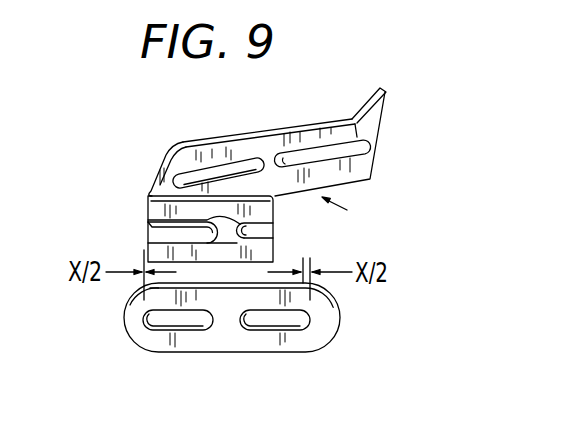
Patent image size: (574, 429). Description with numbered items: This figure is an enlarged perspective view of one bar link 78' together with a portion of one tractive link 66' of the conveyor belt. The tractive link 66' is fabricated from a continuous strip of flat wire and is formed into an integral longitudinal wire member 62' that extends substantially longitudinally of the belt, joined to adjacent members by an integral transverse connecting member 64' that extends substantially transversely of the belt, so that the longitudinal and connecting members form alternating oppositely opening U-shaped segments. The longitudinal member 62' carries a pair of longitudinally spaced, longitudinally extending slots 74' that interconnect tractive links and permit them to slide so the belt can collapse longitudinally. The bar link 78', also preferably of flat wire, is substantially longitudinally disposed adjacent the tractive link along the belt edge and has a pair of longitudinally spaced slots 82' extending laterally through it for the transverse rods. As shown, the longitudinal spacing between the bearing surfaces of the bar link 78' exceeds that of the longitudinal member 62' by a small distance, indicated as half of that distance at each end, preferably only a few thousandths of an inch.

The longitudinal wire member 62' is at (266, 228).
The transverse connecting member 64' is at (143, 163).
The tractive link 66' is at (402, 110).
The longitudinally extending slot 74' is at (259, 163).
The bar link 78' is at (256, 317).
The longitudinally extending slot 82' is at (226, 352).